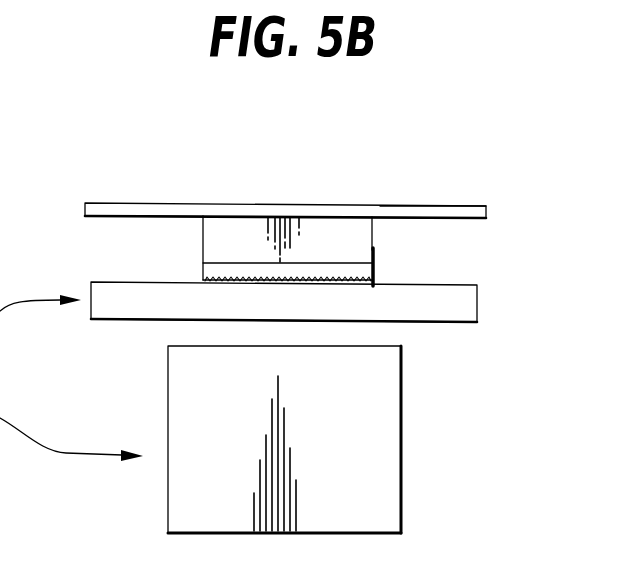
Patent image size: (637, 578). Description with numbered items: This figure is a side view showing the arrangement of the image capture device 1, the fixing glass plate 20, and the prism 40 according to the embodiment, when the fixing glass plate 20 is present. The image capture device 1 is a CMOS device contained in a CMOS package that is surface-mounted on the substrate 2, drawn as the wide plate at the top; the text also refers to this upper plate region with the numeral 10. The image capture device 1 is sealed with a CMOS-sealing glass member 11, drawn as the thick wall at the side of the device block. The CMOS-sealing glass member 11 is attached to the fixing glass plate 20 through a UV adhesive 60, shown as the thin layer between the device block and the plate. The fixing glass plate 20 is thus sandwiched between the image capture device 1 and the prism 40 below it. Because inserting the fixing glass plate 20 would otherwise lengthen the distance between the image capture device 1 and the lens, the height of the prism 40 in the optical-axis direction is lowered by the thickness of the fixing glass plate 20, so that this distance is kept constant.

The image capture device 1 is at (316, 229).
The substrate 2 is at (435, 215).
The nozzle plate 10 is at (143, 208).
The CMOS-sealing glass member 11 is at (367, 273).
The fixing glass plate 20 is at (126, 305).
The prism 40 is at (384, 448).
The UV adhesive 60 is at (204, 280).